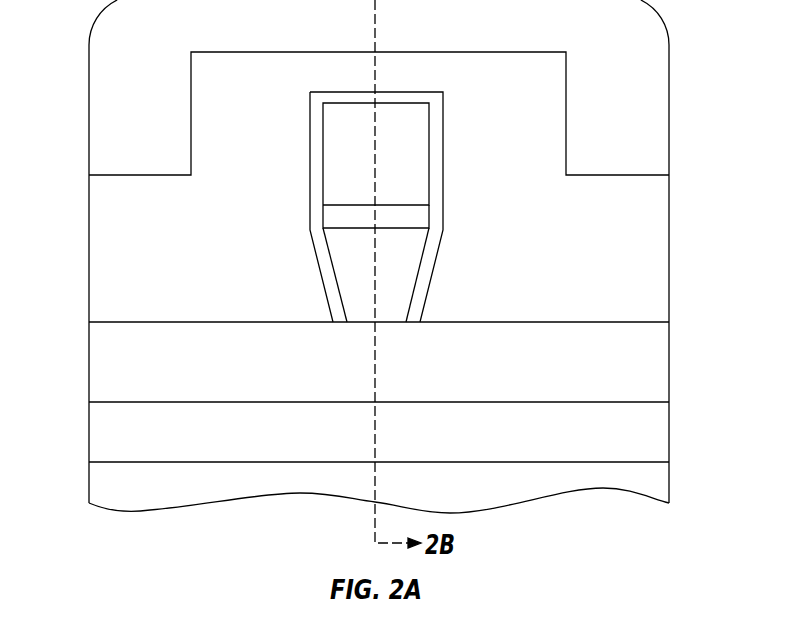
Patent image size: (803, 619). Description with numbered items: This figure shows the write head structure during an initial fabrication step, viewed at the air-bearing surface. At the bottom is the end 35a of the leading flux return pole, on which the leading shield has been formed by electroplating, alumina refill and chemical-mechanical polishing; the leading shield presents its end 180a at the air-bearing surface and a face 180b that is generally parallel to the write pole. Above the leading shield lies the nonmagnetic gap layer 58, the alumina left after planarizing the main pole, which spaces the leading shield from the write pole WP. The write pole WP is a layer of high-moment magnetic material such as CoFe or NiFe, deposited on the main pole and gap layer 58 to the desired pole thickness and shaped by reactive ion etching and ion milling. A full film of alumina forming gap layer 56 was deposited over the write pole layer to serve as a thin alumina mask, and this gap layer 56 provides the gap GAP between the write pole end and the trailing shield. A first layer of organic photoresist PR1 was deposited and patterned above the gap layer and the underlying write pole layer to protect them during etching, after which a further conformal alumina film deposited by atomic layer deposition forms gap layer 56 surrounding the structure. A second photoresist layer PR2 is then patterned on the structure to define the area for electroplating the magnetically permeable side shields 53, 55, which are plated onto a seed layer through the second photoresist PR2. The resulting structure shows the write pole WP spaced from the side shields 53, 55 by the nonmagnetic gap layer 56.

The second photoresist layer PR2 is at (655, 82).
The first layer of organic photoresist PR1 is at (418, 173).
The side shield 55 is at (102, 252).
The side shield 53 is at (655, 252).
The gap layer 56 is at (330, 218).
The gap GAP is at (418, 218).
The write pole WP is at (405, 288).
The nonmagnetic gap layer 58 is at (655, 343).
The face of leading shield 180b is at (267, 402).
The end of leading shield 180a is at (102, 440).
The end of leading flux return pole 35a is at (118, 488).